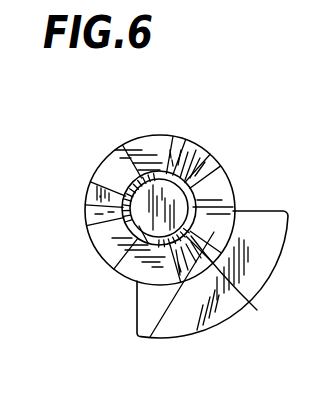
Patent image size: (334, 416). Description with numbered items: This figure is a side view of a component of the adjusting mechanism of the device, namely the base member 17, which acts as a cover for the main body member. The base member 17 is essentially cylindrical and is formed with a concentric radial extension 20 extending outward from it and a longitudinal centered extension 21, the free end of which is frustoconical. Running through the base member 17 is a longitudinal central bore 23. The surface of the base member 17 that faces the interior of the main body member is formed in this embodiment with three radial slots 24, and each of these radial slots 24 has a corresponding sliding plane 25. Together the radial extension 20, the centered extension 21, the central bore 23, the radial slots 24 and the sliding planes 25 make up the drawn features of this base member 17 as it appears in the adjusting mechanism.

The base member 17 is at (233, 190).
The concentric radial extension 20 is at (257, 262).
The longitudinal centered extension 21 is at (123, 147).
The longitudinal central bore 23 is at (118, 258).
The radial slots 24 is at (200, 158).
The sliding planes 25 is at (170, 143).